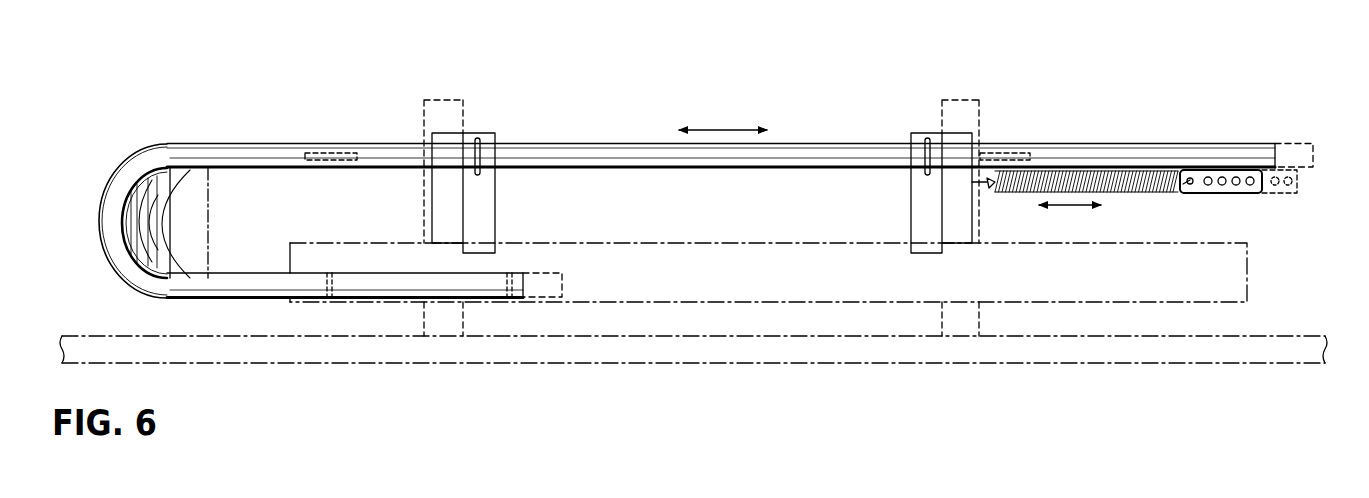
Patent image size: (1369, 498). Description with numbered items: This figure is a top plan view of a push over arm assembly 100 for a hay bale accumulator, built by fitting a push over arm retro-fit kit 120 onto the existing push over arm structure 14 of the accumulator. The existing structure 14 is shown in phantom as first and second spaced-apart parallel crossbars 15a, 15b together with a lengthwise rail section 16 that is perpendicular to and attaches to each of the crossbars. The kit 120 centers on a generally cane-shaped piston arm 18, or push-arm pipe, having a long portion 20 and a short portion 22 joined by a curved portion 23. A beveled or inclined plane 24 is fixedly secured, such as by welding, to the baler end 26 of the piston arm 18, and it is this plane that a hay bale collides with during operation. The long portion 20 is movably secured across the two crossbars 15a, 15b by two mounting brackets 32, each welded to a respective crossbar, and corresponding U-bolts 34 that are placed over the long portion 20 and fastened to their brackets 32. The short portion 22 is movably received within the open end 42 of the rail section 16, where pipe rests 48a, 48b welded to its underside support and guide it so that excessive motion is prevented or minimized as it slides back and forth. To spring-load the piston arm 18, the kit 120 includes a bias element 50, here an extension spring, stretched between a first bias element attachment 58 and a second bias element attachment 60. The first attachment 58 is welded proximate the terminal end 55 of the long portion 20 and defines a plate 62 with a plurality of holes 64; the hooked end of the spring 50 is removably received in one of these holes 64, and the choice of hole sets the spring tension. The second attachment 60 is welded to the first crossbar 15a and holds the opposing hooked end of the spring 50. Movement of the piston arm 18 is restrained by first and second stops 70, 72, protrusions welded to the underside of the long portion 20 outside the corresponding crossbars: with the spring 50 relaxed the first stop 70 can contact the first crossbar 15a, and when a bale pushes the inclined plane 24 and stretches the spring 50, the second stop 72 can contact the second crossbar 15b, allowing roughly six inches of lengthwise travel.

The push over arm assembly 100 is at (117, 72).
The existing push over arm structure 14 is at (1266, 273).
The first parallel crossbar 15a is at (980, 103).
The second parallel crossbar 15b is at (423, 118).
The lengthwise rail section 16 is at (673, 243).
The piston arm 18 is at (574, 141).
The long portion 20 is at (277, 143).
The short portion 22 is at (367, 273).
The curved portion 23 is at (100, 208).
The inclined plane 24 is at (170, 218).
The baler end 26 is at (92, 244).
The mounting bracket 32 is at (496, 198).
The U-bolt 34 is at (478, 137).
The open end 42 is at (288, 262).
The pipe rest 48a is at (327, 285).
The pipe rest 48b is at (512, 285).
The bias element 50 is at (1112, 198).
The terminal end 55 is at (1243, 148).
The first bias element attachment 58 is at (1253, 195).
The second bias element attachment 60 is at (983, 183).
The plate 62 is at (1205, 195).
The holes 64 is at (1250, 177).
The first stop 70 is at (1008, 153).
The second stop 72 is at (332, 153).
The push over arm retro-fit kit 120 is at (645, 101).